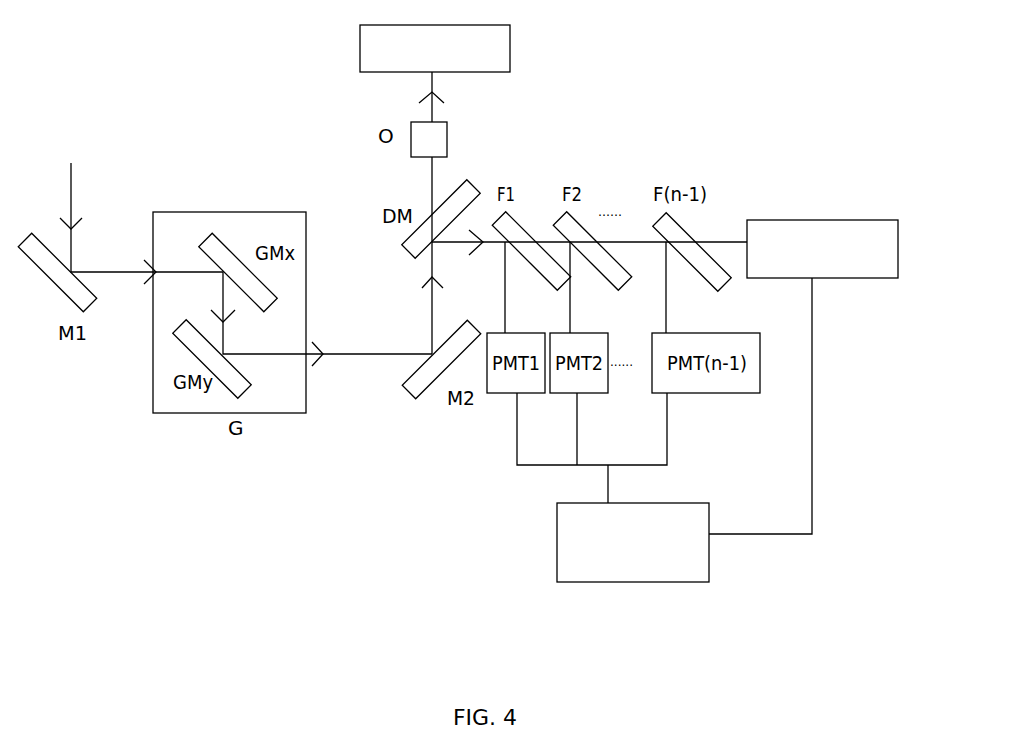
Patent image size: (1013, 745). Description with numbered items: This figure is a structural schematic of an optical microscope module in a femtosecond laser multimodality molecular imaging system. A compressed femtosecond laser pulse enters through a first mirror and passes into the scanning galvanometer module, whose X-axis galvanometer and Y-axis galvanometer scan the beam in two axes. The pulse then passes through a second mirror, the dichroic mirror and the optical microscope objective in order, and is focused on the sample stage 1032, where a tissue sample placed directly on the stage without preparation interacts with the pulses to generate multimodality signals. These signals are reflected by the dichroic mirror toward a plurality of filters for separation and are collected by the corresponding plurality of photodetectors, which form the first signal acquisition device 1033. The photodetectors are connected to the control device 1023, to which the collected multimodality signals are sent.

The sample stage 1032 is at (510, 50).
The first signal acquisition device 1033 is at (898, 252).
The control device 1023 is at (618, 582).